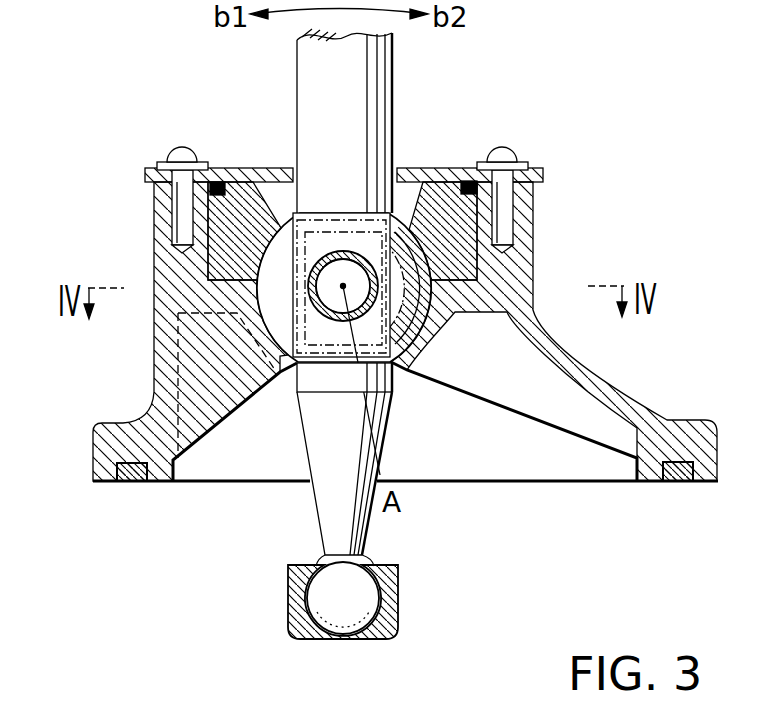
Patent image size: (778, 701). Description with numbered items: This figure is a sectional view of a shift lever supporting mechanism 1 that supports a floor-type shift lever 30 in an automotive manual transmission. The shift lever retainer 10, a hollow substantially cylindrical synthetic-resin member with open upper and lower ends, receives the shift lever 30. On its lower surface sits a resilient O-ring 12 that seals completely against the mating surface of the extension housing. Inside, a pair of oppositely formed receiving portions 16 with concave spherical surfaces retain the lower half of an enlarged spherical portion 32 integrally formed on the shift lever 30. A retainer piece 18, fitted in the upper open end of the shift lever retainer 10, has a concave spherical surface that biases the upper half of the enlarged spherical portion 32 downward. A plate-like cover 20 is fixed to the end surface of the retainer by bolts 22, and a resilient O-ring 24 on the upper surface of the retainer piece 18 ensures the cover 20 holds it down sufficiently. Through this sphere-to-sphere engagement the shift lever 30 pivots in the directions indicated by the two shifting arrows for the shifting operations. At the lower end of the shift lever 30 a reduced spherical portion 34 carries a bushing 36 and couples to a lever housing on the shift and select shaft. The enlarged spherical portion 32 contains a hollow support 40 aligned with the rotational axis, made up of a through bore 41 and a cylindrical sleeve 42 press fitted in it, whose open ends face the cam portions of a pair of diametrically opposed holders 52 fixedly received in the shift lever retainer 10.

The shift lever supporting mechanism 1 is at (543, 184).
The shift lever retainer 10 is at (165, 335).
The resilient O-ring 12 is at (134, 482).
The receiving portions 16 is at (431, 345).
The retainer piece 18 is at (237, 234).
The plate-like cover 20 is at (446, 180).
The bolts 22 is at (183, 212).
The resilient O-ring 24 is at (217, 181).
The shift lever 30 is at (383, 96).
The enlarged spherical portion 32 is at (470, 265).
The reduced spherical portion 34 is at (322, 597).
The bushing 36 is at (395, 597).
The hollow support 40 is at (336, 344).
The through bore 41 is at (372, 315).
The cylindrical sleeve 42 is at (319, 313).
The holders 52 is at (343, 222).